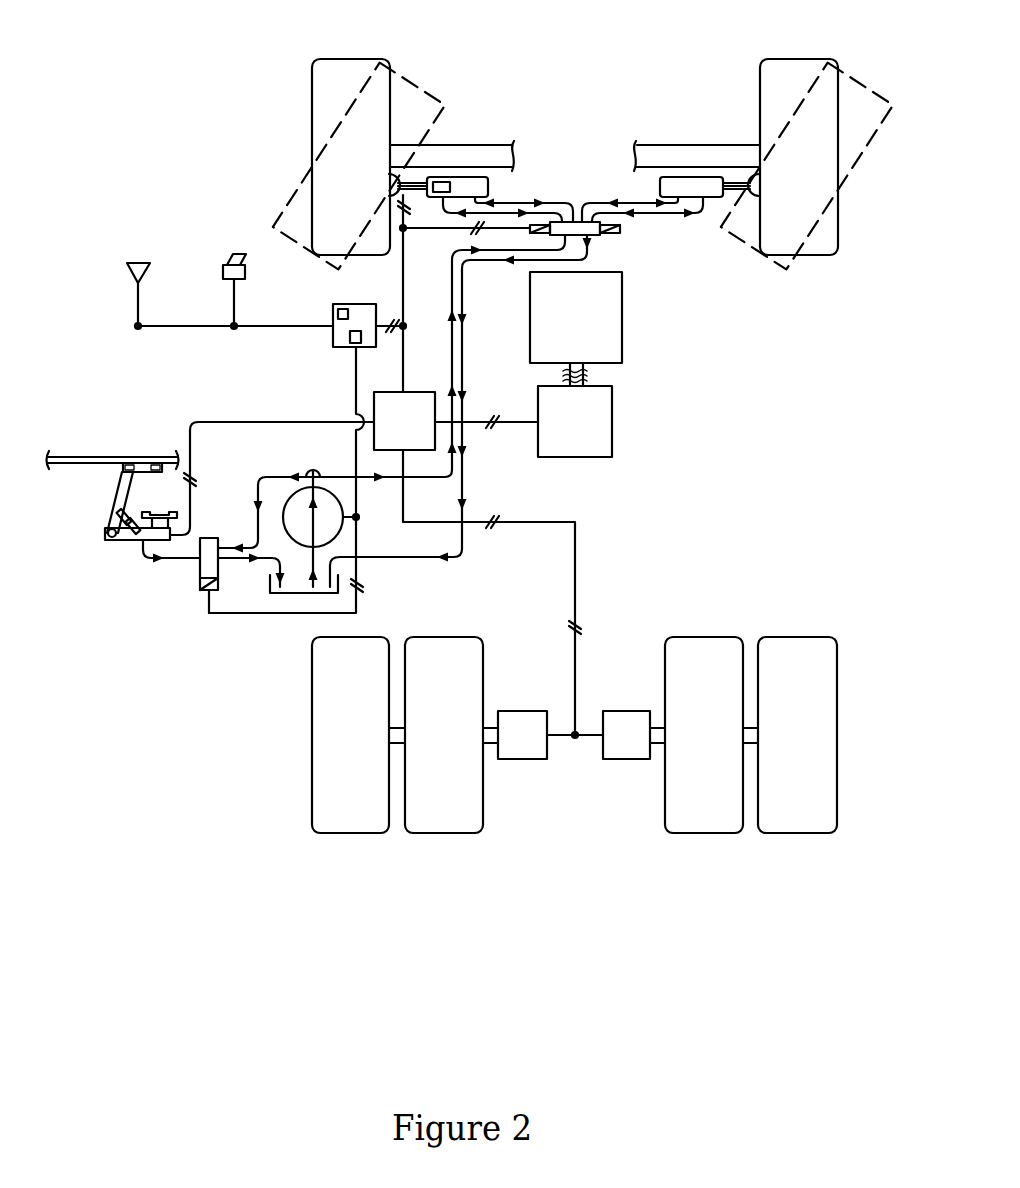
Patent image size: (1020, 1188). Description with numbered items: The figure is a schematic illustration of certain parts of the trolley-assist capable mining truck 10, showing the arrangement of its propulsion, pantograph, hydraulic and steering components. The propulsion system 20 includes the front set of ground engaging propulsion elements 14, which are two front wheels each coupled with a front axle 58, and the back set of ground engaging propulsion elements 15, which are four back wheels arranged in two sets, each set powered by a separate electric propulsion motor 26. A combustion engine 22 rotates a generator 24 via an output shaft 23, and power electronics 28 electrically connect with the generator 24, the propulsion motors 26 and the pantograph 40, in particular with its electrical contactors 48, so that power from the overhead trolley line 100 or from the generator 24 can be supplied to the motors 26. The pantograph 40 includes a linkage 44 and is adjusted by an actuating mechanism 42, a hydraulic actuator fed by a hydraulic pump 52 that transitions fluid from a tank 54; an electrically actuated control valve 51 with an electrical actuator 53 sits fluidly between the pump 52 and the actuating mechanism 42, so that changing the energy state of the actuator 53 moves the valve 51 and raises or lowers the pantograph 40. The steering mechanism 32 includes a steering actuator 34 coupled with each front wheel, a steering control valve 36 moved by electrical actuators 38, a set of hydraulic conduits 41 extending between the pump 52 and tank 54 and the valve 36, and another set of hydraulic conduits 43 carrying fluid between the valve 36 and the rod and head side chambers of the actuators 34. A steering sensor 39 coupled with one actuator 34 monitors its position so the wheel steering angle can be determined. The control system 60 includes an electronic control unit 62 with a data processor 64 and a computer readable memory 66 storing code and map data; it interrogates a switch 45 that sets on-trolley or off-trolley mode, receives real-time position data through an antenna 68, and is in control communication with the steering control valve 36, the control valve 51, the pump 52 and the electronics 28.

The mining truck 10 is at (238, 156).
The front set of ground engaging propulsion elements 14 is at (350, 59).
The back set of ground engaging propulsion elements 15 is at (352, 834).
The propulsion system 20 is at (605, 472).
The combustion engine 22 is at (622, 343).
The output shaft 23 is at (591, 372).
The generator 24 is at (612, 405).
The electric propulsion motor 26 is at (522, 761).
The power electronics 28 is at (386, 392).
The steering mechanism 32 is at (668, 247).
The steering actuator 34 is at (488, 181).
The steering control valve 36 is at (600, 238).
The electrical actuator 38 is at (532, 233).
The steering sensor 39 is at (450, 187).
The pantograph 40 is at (105, 534).
The hydraulic conduits 41 is at (438, 315).
The actuating mechanism 42 is at (130, 512).
The hydraulic conduits 43 is at (620, 196).
The linkage 44 is at (117, 496).
The switch 45 is at (231, 254).
The electrical contactors 48 is at (124, 457).
The control valve 51 is at (209, 538).
The hydraulic pump 52 is at (284, 526).
The electrical actuator 53 is at (200, 585).
The tank 54 is at (268, 585).
The front axle 58 is at (462, 145).
The control system 60 is at (330, 363).
The electronic control unit 62 is at (359, 304).
The data processor 64 is at (333, 313).
The computer readable memory 66 is at (333, 340).
The antenna 68 is at (137, 263).
The overhead trolley line 100 is at (87, 448).